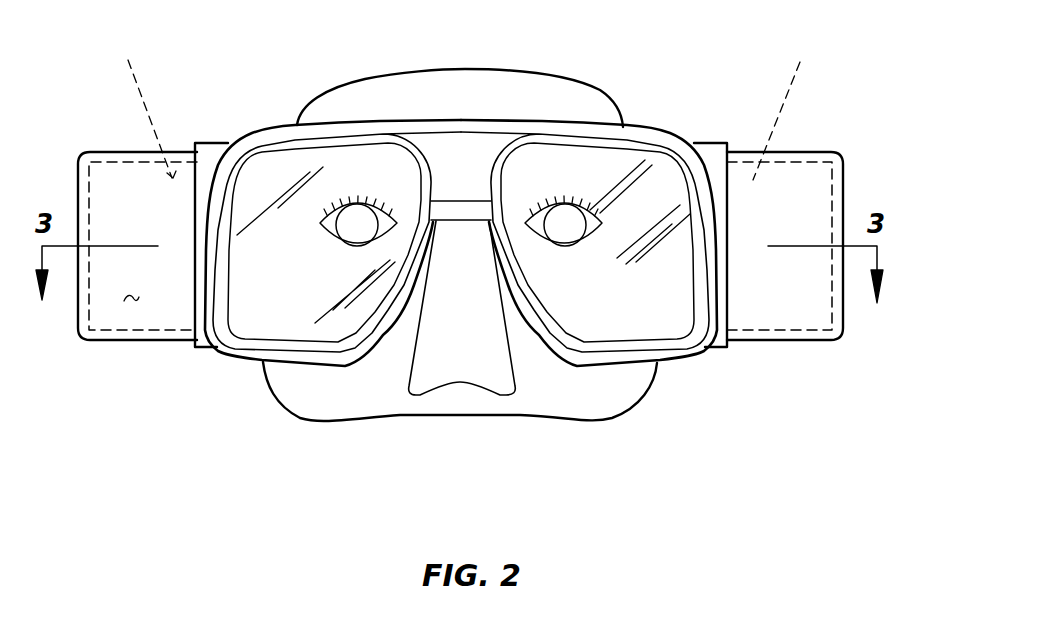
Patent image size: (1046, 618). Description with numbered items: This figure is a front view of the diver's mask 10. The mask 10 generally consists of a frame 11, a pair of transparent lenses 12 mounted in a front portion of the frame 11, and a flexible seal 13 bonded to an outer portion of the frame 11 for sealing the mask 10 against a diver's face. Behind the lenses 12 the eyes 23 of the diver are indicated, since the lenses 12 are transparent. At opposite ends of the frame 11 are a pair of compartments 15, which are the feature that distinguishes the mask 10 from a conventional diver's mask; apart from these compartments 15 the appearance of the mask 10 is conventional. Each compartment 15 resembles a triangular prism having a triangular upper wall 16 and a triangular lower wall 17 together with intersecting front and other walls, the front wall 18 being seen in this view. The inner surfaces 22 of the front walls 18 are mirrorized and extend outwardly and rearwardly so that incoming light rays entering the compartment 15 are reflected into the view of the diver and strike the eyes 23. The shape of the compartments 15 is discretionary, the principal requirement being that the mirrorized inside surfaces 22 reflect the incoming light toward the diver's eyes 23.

The diver's mask 10 is at (490, 291).
The frame 11 is at (528, 123).
The transparent lenses 12 is at (290, 162).
The flexible seal 13 is at (602, 423).
The compartments 15 is at (490, 241).
The upper wall 16 is at (115, 152).
The lower wall 17 is at (162, 340).
The front wall 18 is at (132, 302).
The mirrorized inside surfaces 22 is at (128, 60).
The eyes 23 is at (353, 247).